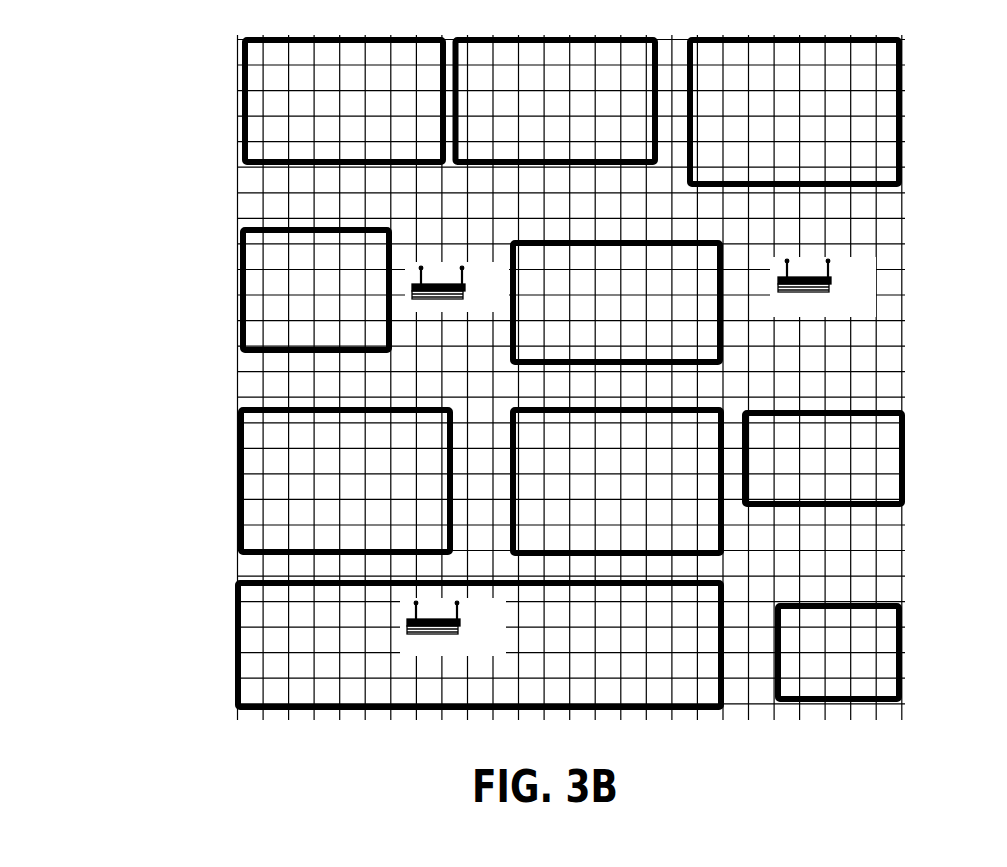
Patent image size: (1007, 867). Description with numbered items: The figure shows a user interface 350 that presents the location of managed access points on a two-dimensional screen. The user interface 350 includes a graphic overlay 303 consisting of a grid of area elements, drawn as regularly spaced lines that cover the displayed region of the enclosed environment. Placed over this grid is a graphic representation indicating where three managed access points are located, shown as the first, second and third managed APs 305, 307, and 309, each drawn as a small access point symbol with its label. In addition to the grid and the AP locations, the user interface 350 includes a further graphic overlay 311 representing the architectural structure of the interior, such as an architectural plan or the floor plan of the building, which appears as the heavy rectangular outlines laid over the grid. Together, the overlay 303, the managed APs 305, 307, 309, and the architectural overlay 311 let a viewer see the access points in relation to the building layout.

The graphic overlay 303 is at (496, 52).
The managed AP 305 is at (466, 288).
The managed AP 307 is at (834, 284).
The managed AP 309 is at (462, 626).
The graphic overlay 311 is at (834, 155).
The user interface 350 is at (180, 506).